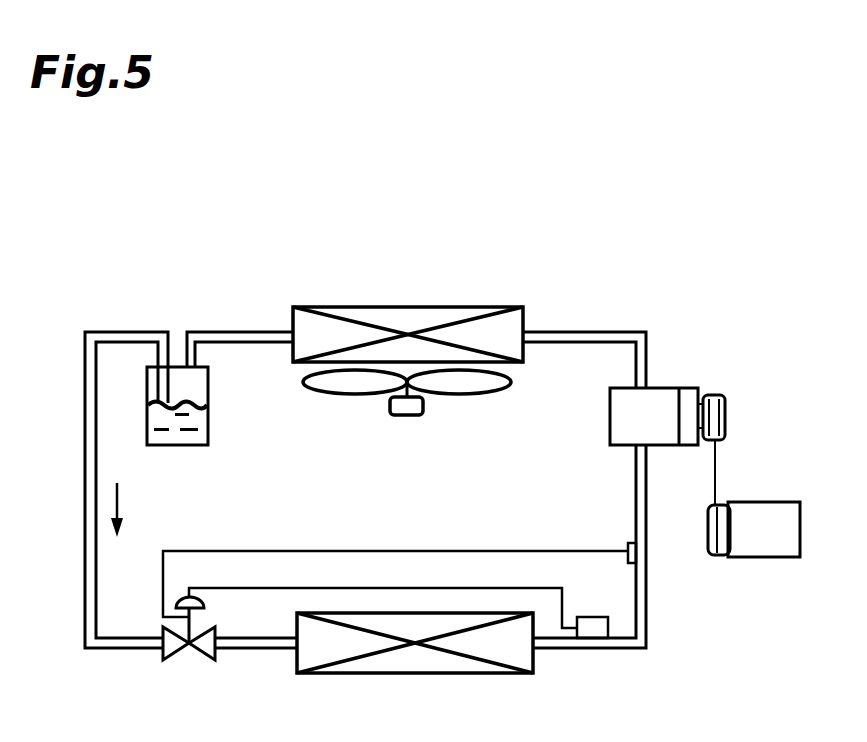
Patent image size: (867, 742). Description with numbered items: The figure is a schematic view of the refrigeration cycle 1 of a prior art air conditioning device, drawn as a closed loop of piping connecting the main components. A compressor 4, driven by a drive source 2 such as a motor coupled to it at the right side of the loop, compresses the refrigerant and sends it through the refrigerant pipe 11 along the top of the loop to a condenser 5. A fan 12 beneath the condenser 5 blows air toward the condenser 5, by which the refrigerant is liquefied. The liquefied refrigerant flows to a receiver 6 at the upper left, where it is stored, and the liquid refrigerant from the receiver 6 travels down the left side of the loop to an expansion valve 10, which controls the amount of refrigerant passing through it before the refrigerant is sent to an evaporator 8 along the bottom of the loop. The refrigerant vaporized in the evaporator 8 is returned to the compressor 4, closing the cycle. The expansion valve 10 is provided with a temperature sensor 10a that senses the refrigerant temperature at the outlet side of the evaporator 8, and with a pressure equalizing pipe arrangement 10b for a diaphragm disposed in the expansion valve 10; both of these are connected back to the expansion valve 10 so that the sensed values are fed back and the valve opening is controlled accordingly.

The refrigeration cycle 1 is at (655, 253).
The drive source 2 is at (755, 513).
The compressor 4 is at (665, 388).
The condenser 5 is at (425, 306).
The receiver 6 is at (208, 404).
The evaporator 8 is at (420, 674).
The expansion valve 10 is at (176, 656).
The temperature sensor 10a is at (585, 617).
The pressure equalizing pipe arrangement 10b is at (505, 551).
The refrigerant pipe 11 is at (578, 332).
The fan 12 is at (345, 384).